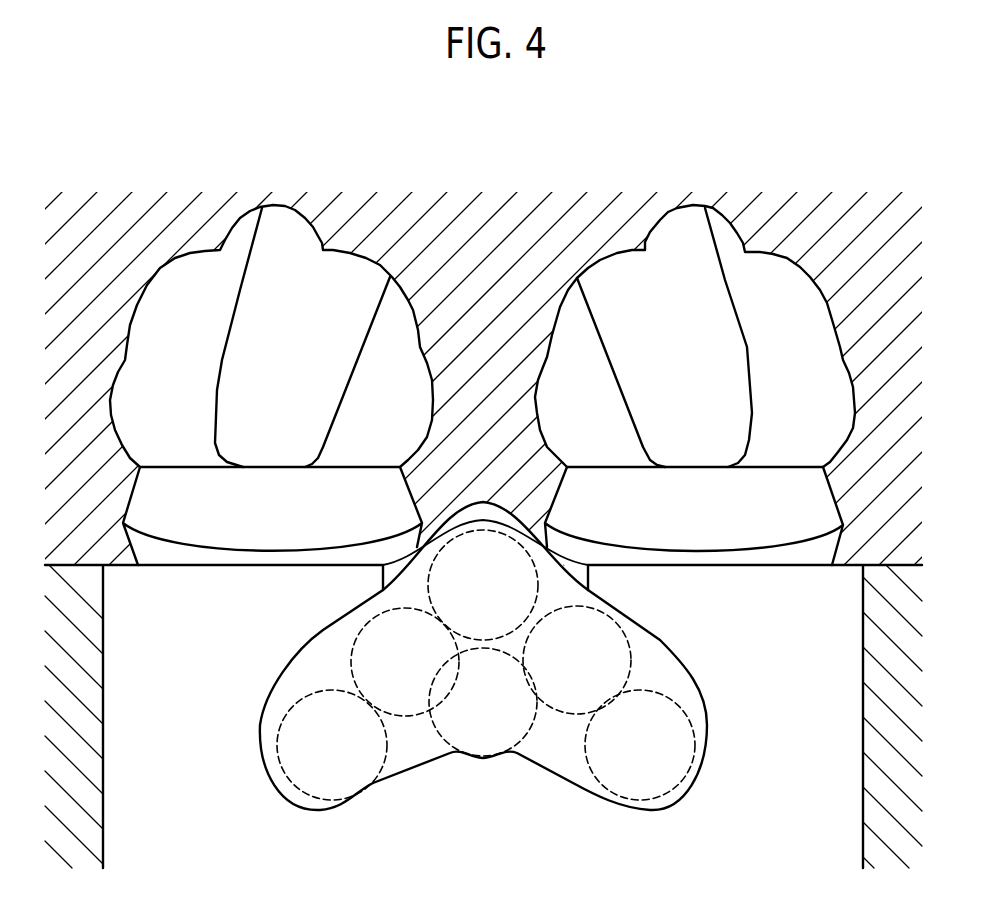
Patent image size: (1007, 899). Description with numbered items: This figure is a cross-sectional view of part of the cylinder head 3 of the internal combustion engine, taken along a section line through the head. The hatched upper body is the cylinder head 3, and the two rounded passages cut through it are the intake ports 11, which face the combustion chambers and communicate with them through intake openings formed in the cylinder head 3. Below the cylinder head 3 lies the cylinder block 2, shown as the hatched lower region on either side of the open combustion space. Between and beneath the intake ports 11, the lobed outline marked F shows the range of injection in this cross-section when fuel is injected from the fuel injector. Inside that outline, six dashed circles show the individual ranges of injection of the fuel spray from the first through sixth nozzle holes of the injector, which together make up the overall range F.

The intake port 11 is at (198, 280).
The cylinder head 3 is at (817, 222).
The cylinder block 2 is at (893, 663).
The range of injection F is at (514, 656).